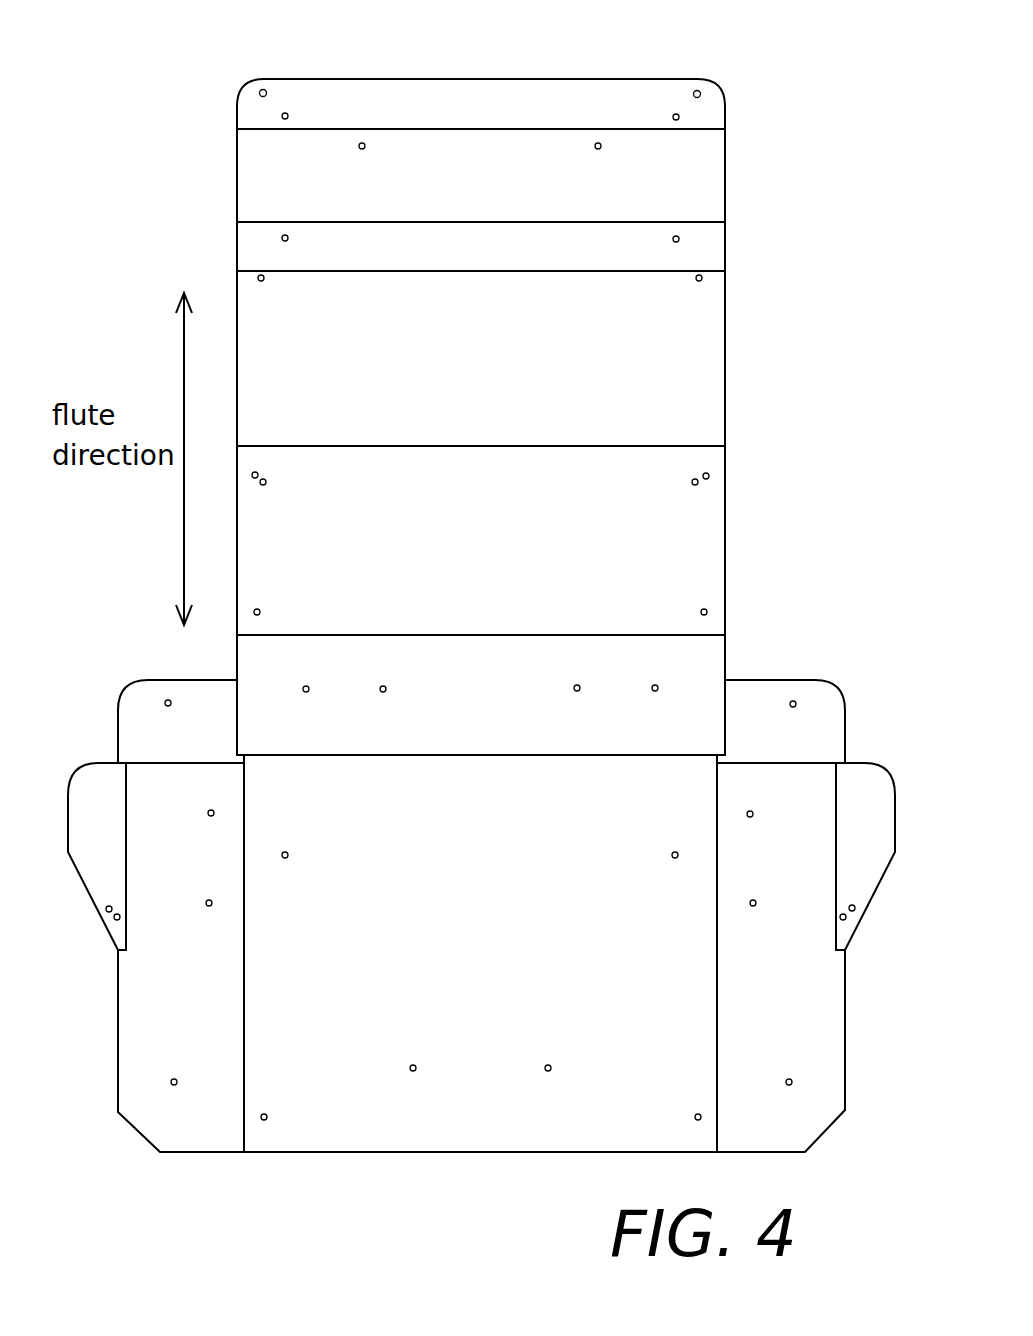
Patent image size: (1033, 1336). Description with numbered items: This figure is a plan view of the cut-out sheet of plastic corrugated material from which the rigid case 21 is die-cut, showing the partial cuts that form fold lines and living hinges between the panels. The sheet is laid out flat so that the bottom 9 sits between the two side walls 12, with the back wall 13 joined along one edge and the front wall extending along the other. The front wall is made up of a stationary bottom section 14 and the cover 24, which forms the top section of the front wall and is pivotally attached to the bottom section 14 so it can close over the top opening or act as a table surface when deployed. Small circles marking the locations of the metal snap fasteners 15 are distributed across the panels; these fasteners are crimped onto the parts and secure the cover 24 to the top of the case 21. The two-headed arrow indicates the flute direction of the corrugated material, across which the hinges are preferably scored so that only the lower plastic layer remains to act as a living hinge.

The bottom 9 is at (665, 695).
The side walls 12 is at (195, 1112).
The back wall 13 is at (473, 1122).
The stationary bottom section of the front wall 14 is at (715, 535).
The metal snap fasteners 15 is at (268, 93).
The rigid case 21 is at (236, 198).
The cover 24 is at (703, 290).